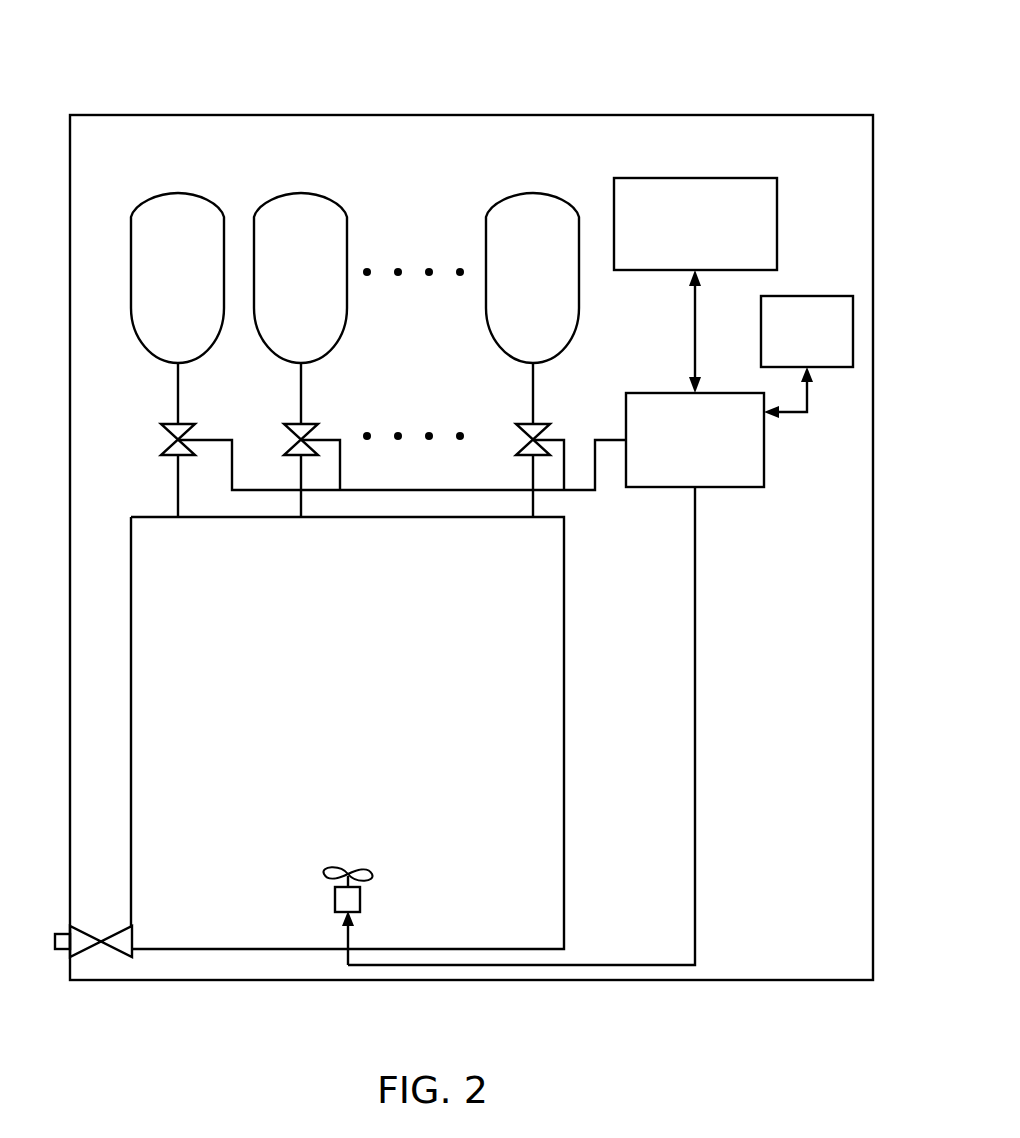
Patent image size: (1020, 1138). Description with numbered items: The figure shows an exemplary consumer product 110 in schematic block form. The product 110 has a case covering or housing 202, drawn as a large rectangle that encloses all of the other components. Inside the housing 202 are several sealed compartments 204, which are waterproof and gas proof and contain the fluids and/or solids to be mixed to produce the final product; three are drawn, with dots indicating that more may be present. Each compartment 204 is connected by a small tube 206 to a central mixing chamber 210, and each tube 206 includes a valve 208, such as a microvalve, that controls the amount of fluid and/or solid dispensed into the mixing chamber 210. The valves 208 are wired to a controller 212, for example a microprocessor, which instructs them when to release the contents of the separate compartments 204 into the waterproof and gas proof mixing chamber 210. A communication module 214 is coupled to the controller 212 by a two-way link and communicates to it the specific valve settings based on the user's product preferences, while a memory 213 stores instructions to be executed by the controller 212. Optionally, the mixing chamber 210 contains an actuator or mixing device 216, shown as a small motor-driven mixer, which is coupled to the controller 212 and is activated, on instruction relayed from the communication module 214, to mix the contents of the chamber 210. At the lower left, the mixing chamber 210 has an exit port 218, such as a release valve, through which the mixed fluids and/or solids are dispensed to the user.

The product 110 is at (688, 92).
The case covering or housing 202 is at (657, 980).
The sealed compartments 204 is at (178, 193).
The small tube 206 is at (178, 391).
The valve 208 is at (173, 423).
The mixing chamber 210 is at (564, 703).
The controller 212 is at (765, 440).
The memory 213 is at (807, 296).
The communication module 214 is at (697, 178).
The actuator or mixing device 216 is at (360, 892).
The exit port 218 is at (57, 950).